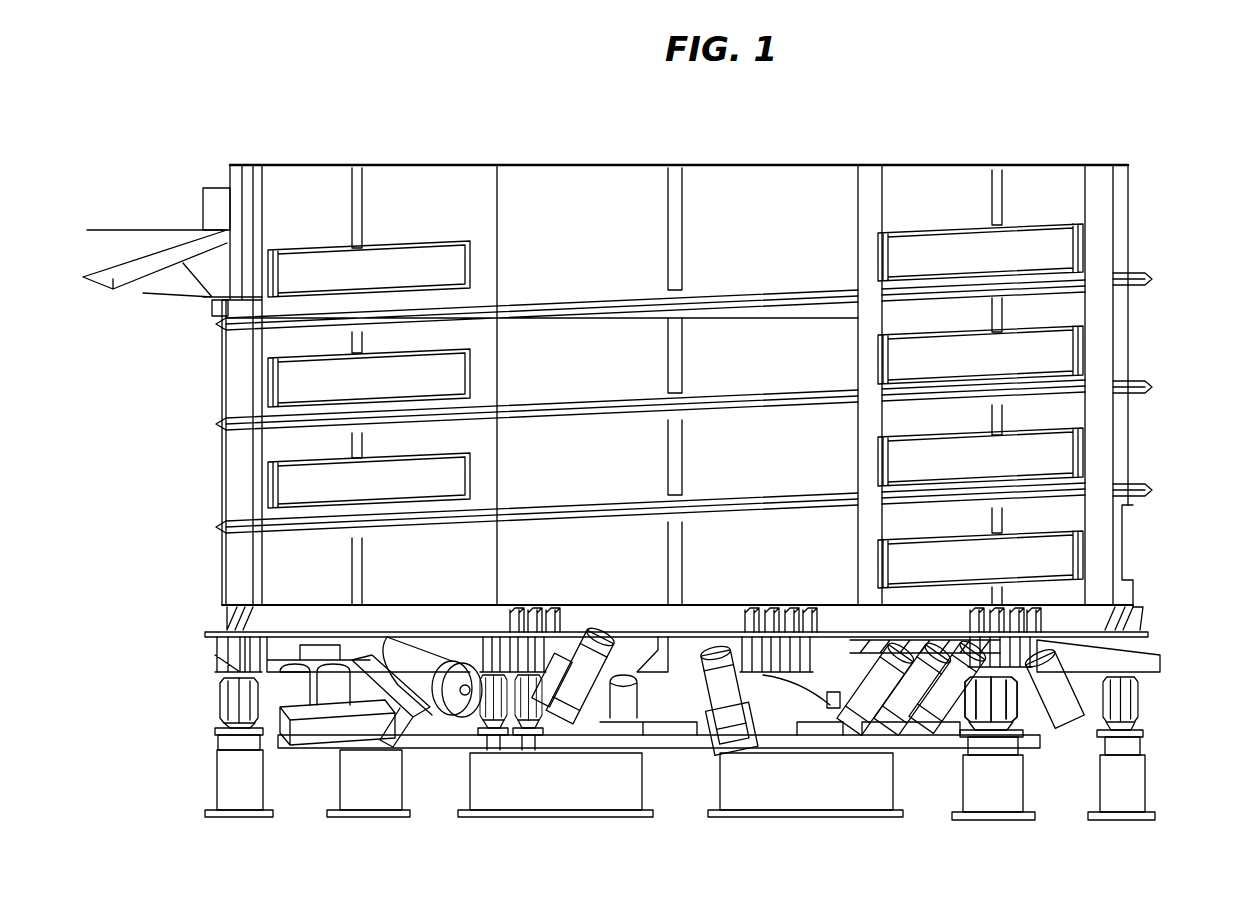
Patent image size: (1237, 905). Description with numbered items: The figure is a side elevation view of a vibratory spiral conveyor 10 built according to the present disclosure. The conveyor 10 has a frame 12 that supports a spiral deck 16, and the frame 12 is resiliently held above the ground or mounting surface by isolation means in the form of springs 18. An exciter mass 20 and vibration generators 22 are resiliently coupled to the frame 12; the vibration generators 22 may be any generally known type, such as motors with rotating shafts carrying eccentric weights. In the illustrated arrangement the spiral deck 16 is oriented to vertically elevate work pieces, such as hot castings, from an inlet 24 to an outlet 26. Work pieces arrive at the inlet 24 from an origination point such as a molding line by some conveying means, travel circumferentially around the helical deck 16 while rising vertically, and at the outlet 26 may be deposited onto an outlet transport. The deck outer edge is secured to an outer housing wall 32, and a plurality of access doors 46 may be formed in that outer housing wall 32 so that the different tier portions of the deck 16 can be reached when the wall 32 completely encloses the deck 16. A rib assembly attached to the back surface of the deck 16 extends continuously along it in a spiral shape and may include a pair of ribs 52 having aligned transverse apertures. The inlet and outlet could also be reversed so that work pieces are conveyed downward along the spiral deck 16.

The spiral conveyor 10 is at (928, 150).
The frame 12 is at (262, 617).
The spiral deck 16 is at (308, 410).
The springs 18 is at (233, 708).
The exciter mass 20 is at (449, 760).
The vibration generators 22 is at (428, 705).
The inlet 24 is at (1142, 521).
The outlet 26 is at (141, 224).
The outer housing wall 32 is at (1050, 184).
The access doors 46 is at (1062, 356).
The ribs 52 is at (287, 483).